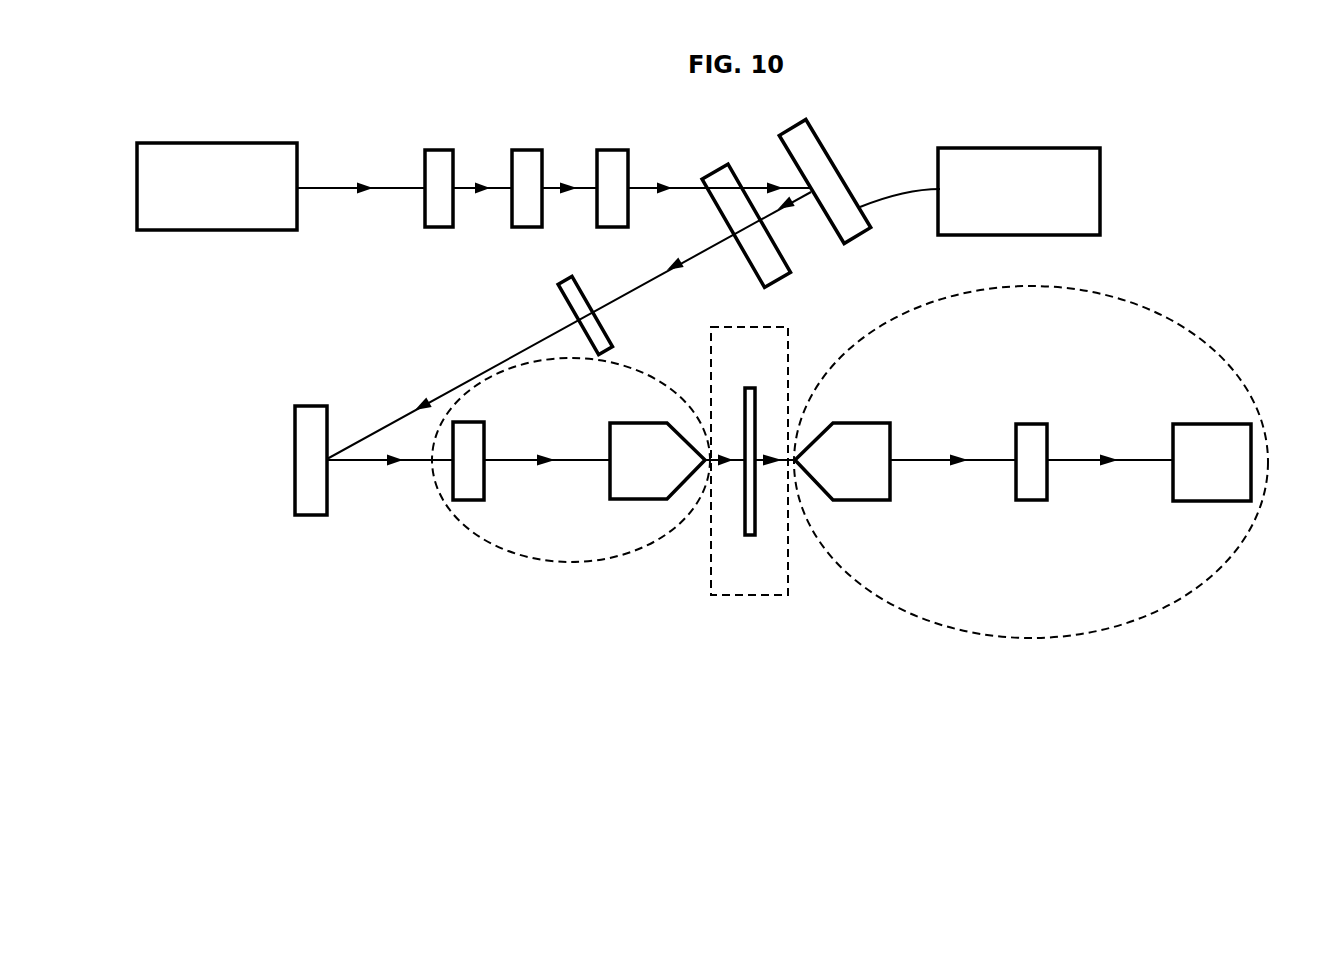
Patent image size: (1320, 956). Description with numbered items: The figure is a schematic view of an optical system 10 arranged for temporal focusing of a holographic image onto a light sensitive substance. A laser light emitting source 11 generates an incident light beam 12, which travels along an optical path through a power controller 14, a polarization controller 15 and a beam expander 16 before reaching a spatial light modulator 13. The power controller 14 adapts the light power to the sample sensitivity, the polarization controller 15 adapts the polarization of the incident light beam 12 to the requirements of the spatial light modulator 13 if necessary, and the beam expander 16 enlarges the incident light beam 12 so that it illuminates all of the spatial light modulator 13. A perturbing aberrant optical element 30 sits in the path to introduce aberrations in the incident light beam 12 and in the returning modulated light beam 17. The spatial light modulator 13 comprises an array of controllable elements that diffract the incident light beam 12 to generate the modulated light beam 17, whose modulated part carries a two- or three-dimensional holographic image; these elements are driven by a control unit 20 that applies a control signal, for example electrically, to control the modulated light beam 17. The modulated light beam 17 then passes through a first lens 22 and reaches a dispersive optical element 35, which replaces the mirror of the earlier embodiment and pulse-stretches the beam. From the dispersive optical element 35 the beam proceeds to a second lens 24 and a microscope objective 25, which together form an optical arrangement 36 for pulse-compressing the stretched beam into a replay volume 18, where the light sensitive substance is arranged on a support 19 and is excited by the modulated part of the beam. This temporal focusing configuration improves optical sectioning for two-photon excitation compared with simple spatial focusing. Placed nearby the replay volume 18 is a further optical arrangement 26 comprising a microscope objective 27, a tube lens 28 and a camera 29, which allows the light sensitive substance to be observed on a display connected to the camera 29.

The optical system 10 is at (360, 329).
The laser light emitting source 11 is at (209, 157).
The incident light beam 12 is at (332, 186).
The spatial light modulator 13 is at (826, 180).
The power controller 14 is at (440, 217).
The polarization controller 15 is at (527, 217).
The beam expander 16 is at (612, 217).
The modulated light beam 17 is at (768, 215).
The replay volume 18 is at (749, 597).
The support 19 is at (749, 537).
The control unit 20 is at (1020, 165).
The first lens 22 is at (597, 336).
The second lens 24 is at (473, 476).
The microscope objective 25 is at (636, 487).
The optical arrangement 26 is at (1028, 638).
The microscope objective 27 is at (858, 490).
The tube lens 28 is at (1032, 488).
The camera 29 is at (1210, 487).
The perturbing aberrant optical element 30 is at (762, 257).
The dispersive optical element 35 is at (312, 503).
The optical arrangement 36 is at (567, 562).